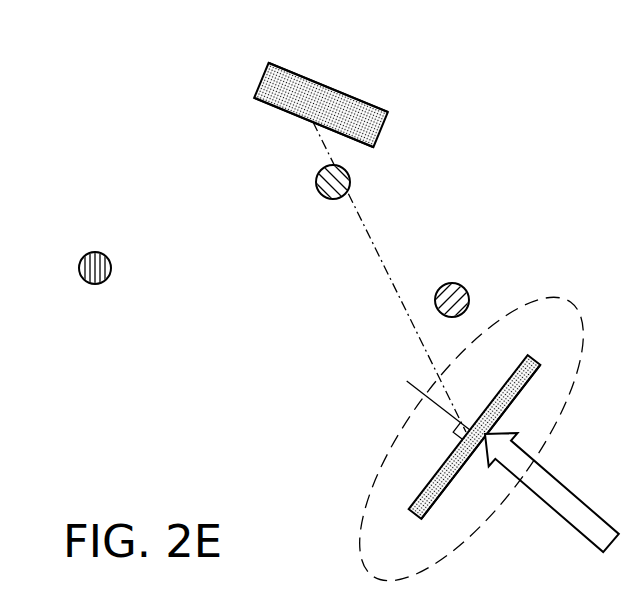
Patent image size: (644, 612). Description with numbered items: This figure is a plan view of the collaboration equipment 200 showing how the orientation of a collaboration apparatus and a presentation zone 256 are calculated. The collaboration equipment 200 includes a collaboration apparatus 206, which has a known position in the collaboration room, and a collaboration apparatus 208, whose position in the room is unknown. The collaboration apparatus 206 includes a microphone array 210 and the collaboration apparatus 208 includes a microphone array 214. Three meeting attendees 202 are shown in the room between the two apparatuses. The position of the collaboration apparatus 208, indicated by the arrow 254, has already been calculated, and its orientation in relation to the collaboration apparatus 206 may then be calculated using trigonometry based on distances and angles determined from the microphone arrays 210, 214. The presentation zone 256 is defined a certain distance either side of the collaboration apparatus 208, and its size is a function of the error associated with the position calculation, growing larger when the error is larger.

The collaboration equipment 200 is at (373, 106).
The meeting attendees 202 is at (437, 308).
The collaboration apparatus 206 is at (291, 71).
The collaboration apparatus 208 is at (536, 372).
The microphone array 210 is at (276, 106).
The microphone array 214 is at (420, 493).
The arrow indicating position 254 is at (568, 490).
The presentation zone 256 is at (466, 527).